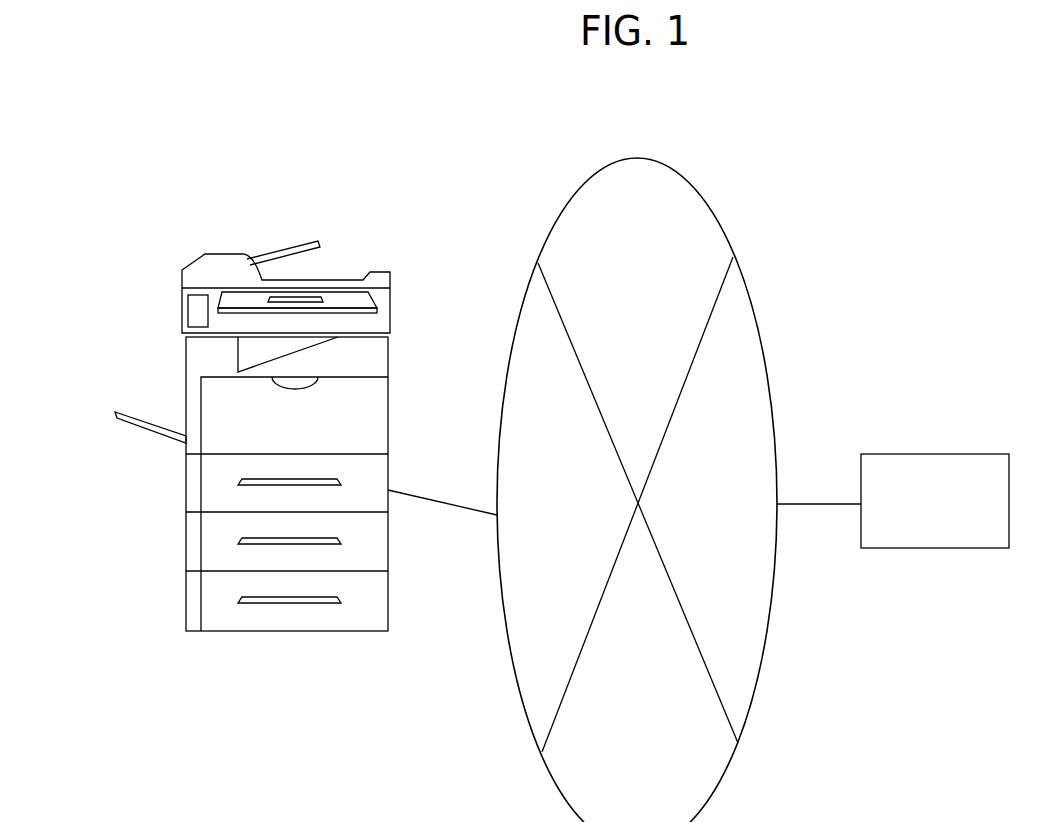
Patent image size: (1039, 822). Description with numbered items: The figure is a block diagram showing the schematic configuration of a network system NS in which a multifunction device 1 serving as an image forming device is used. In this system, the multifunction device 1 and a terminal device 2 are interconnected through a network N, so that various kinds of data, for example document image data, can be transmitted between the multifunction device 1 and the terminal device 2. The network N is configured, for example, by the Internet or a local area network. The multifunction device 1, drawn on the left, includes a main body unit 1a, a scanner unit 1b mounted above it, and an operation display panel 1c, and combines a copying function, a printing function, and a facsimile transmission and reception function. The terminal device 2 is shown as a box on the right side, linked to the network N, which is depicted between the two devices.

The multifunction device 1 is at (398, 220).
The main body unit 1a is at (388, 425).
The scanner unit 1b is at (226, 254).
The operation display panel 1c is at (300, 298).
The network N is at (683, 173).
The network system NS is at (906, 203).
The terminal device 2 is at (934, 454).